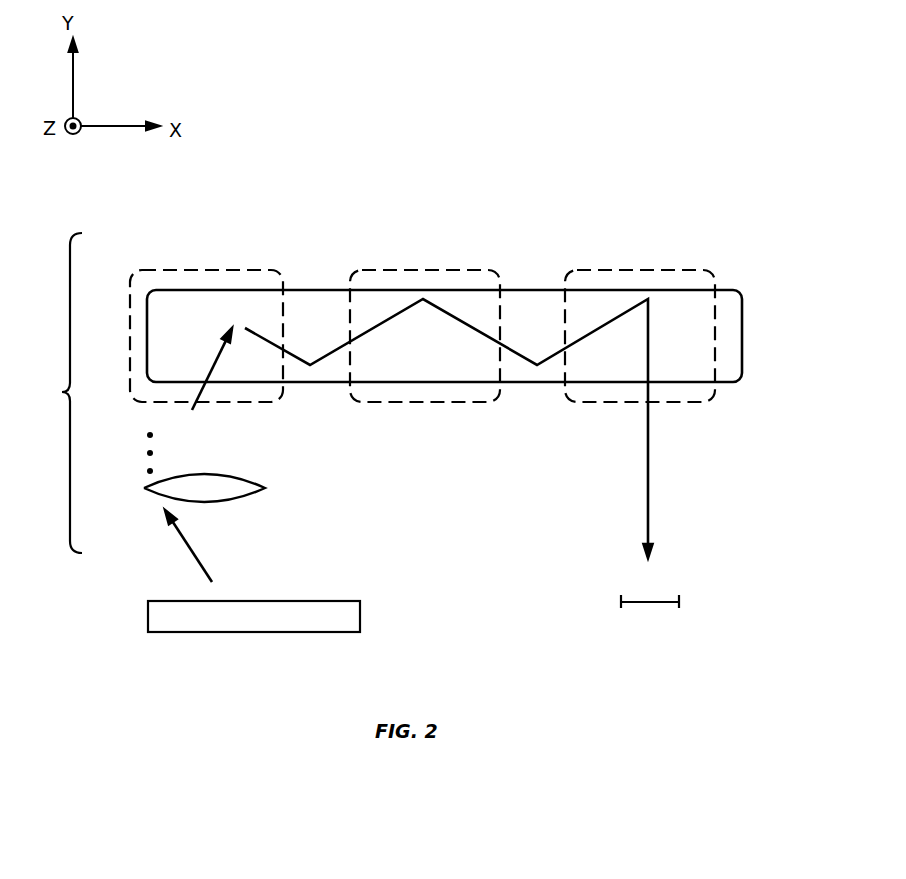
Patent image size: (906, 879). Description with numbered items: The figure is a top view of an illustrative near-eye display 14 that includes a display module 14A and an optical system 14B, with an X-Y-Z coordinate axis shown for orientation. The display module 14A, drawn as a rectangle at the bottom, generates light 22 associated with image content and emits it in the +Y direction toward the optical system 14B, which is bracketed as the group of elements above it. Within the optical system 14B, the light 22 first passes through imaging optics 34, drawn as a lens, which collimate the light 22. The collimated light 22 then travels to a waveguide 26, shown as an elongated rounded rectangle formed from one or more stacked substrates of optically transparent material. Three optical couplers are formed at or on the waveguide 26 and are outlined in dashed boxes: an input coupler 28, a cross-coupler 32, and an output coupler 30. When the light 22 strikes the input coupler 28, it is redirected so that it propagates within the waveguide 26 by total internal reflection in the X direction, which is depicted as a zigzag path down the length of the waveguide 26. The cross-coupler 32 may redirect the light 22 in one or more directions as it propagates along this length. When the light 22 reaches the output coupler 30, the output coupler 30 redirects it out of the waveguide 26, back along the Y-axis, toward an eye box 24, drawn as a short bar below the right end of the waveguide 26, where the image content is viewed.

The display 14 is at (570, 141).
The display module 14A is at (360, 614).
The optical system 14B is at (49, 393).
The light 22 is at (186, 427).
The eye box 24 is at (652, 604).
The waveguide 26 is at (742, 337).
The input coupler 28 is at (229, 270).
The output coupler 30 is at (635, 270).
The cross-coupler 32 is at (420, 270).
The imaging optics 34 is at (286, 483).